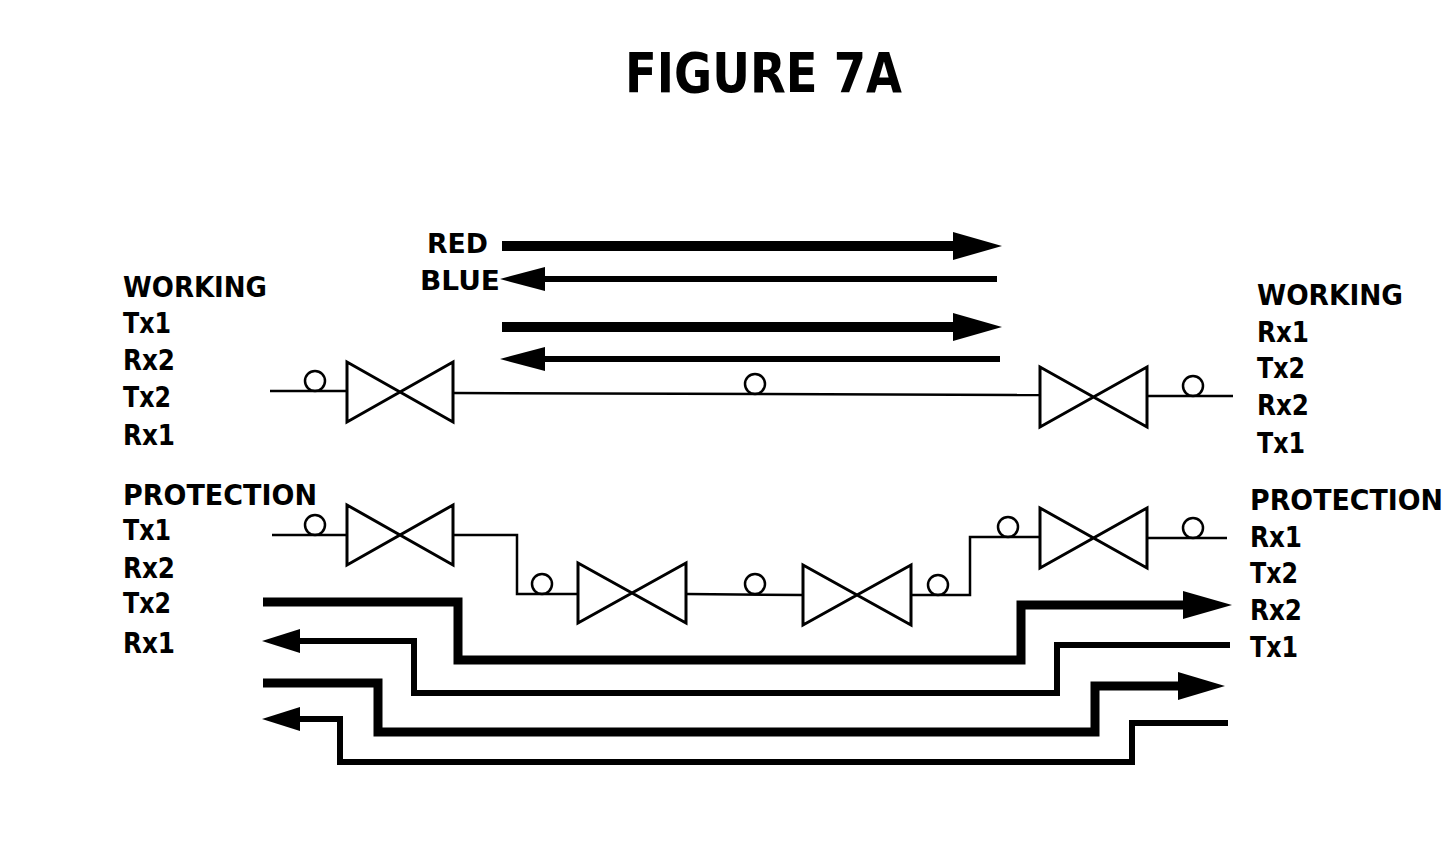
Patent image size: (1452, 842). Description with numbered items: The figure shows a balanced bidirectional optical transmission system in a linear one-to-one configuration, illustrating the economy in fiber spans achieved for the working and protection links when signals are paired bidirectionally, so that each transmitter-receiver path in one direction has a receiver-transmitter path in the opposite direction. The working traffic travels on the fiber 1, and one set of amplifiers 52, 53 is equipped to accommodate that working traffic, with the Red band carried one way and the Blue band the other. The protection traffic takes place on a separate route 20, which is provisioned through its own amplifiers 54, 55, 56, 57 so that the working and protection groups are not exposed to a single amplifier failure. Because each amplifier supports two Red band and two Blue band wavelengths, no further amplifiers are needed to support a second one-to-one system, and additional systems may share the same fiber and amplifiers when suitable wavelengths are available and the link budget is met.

The fiber 1 is at (623, 394).
The separate route 20 is at (522, 540).
The amplifier 52 is at (424, 379).
The amplifier 53 is at (1062, 377).
The amplifier 54 is at (428, 513).
The amplifier 55 is at (655, 578).
The amplifier 56 is at (872, 583).
The amplifier 57 is at (1140, 508).